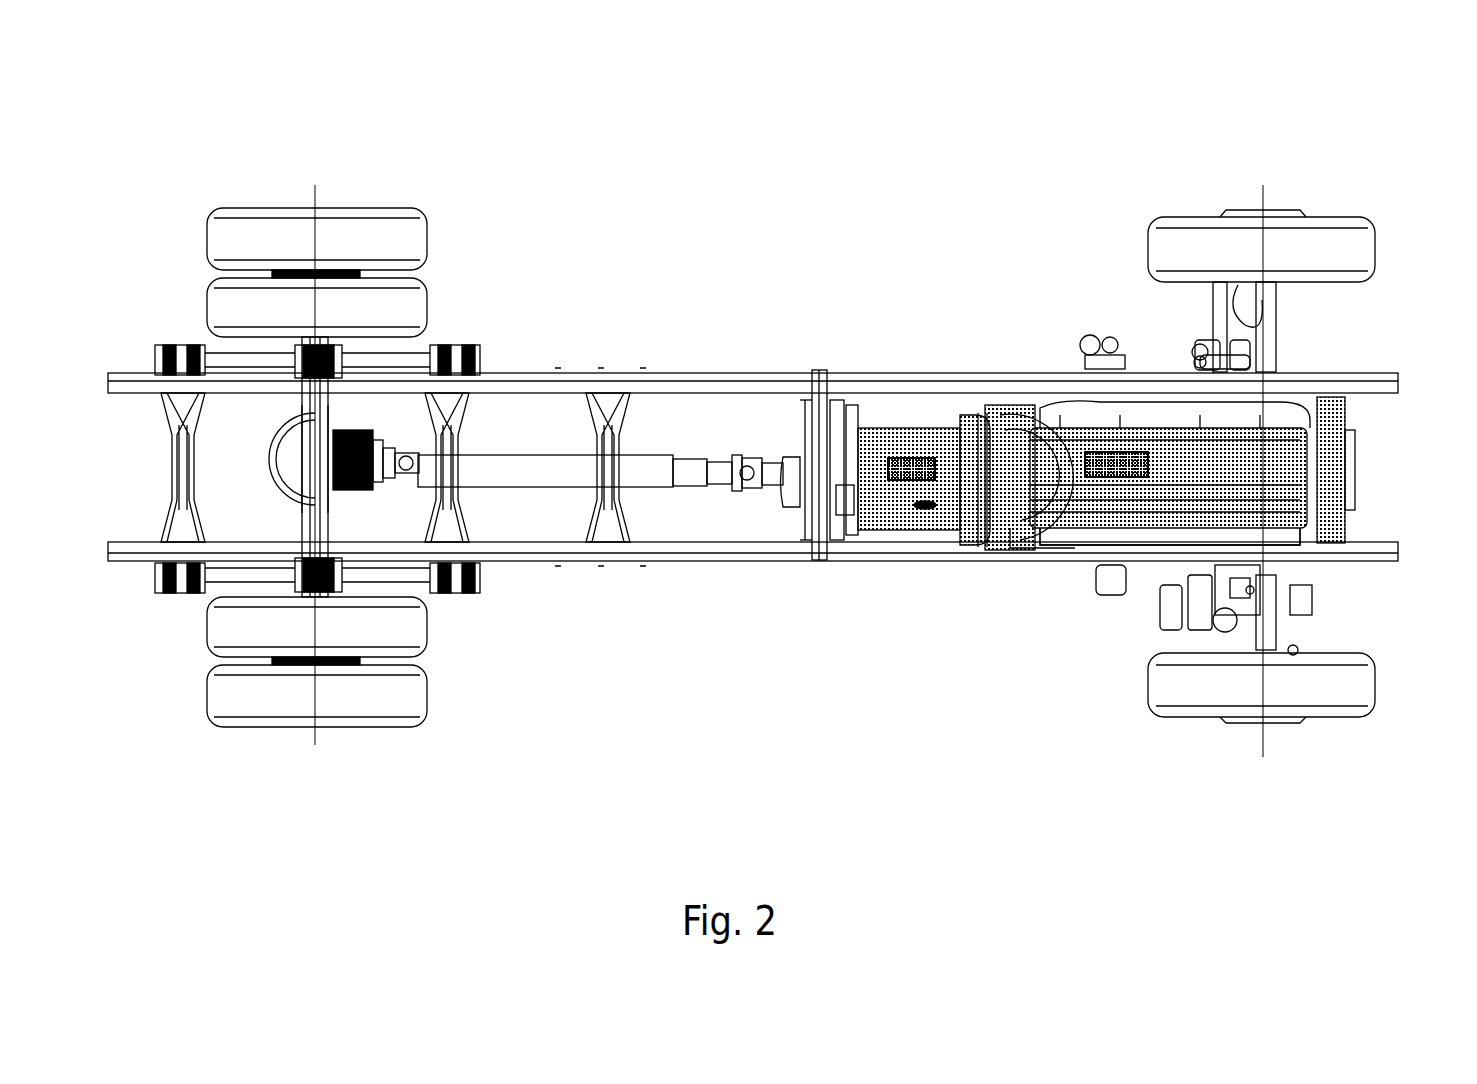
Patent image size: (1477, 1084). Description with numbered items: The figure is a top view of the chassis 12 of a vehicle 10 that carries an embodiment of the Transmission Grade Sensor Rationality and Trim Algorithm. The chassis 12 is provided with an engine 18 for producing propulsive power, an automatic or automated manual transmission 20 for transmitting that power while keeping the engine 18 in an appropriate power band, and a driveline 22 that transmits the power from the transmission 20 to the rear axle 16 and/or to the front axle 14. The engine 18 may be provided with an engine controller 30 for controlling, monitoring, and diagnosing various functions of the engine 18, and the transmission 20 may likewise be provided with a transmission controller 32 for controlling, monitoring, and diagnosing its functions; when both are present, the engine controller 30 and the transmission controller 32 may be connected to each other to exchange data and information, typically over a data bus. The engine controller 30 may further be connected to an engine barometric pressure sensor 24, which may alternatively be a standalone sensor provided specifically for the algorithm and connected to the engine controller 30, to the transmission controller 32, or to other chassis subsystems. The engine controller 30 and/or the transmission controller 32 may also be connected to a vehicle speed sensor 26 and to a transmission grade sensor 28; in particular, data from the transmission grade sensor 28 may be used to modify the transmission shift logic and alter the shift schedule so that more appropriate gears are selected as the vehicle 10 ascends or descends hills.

The vehicle 10 is at (849, 262).
The chassis 12 is at (665, 375).
The front axle 14 is at (1306, 212).
The rear axle 16 is at (376, 210).
The engine 18 is at (1092, 510).
The automatic or automated manual transmission 20 is at (888, 515).
The driveline 22 is at (500, 470).
The engine barometric pressure sensor 24 is at (1252, 590).
The vehicle speed sensor 26 is at (1294, 652).
The transmission grade sensor 28 is at (924, 508).
The engine controller 30 is at (1098, 452).
The transmission controller 32 is at (908, 455).